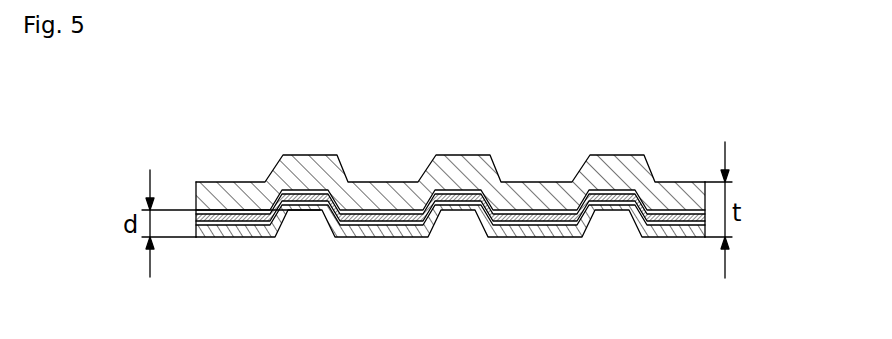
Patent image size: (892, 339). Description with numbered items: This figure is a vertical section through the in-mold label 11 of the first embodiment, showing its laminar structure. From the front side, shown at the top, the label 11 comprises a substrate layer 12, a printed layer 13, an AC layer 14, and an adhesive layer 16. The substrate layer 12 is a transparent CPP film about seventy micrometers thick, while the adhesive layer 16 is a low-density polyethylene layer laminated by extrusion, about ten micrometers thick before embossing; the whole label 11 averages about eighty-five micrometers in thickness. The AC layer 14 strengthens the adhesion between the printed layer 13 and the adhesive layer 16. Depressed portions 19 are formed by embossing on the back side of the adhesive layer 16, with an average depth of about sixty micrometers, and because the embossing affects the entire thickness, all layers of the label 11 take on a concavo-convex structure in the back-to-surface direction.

The label 11 is at (680, 147).
The substrate layer 12 is at (615, 172).
The printed layer 13 is at (337, 192).
The AC layer 14 is at (458, 203).
The adhesive layer 16 is at (563, 228).
The depressed portions 19 is at (455, 212).